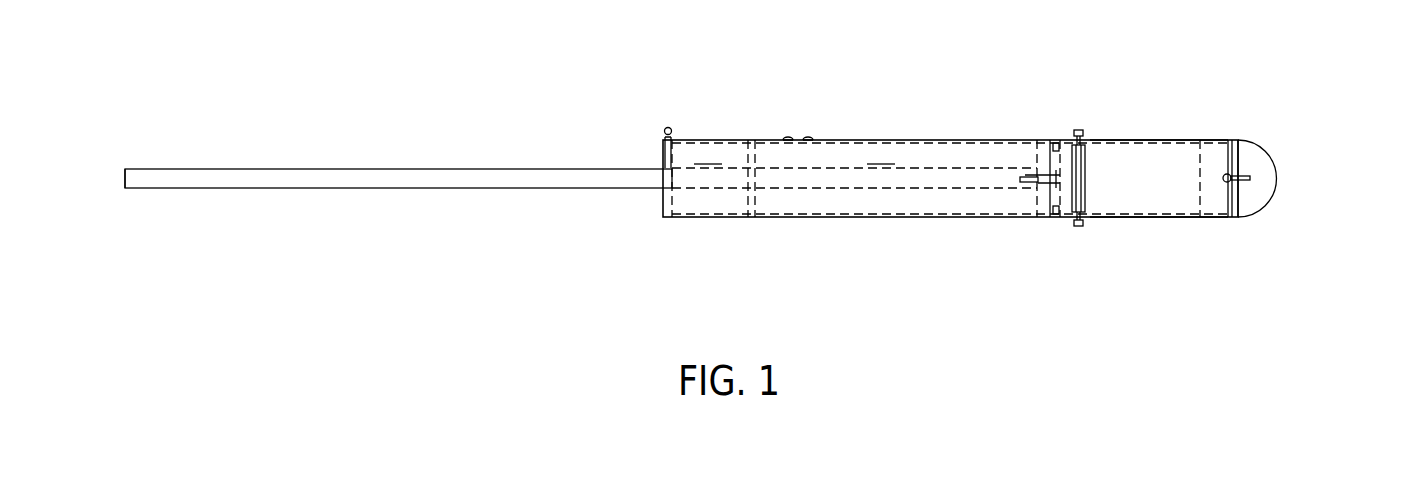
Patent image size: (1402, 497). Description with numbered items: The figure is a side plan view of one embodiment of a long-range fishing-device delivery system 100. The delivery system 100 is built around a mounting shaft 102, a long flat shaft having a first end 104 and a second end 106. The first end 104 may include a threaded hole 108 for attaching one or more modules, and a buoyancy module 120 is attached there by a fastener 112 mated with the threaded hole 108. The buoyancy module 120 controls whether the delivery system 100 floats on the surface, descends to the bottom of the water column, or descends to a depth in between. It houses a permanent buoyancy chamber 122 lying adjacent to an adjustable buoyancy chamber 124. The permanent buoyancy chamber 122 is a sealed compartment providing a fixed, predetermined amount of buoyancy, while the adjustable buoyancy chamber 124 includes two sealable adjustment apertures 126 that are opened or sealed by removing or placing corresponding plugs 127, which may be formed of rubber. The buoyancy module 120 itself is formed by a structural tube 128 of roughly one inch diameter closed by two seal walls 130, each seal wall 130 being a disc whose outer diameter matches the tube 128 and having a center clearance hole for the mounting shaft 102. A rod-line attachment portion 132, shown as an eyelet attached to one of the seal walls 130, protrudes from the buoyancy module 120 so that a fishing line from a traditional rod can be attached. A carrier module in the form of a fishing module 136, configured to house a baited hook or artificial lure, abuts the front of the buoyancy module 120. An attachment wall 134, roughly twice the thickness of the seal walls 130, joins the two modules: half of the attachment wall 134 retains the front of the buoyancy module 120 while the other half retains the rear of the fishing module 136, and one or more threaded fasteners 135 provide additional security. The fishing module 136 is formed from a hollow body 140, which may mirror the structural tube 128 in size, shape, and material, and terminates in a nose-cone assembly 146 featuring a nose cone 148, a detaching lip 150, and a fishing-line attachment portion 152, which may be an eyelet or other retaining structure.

The long-range fishing-device delivery system 100 is at (487, 91).
The mounting shaft 102 is at (295, 202).
The first end 104 is at (1008, 202).
The second end 106 is at (155, 161).
The threaded hole 108 is at (1046, 166).
The fastener 112 is at (1013, 164).
The buoyancy module 120 is at (783, 255).
The permanent buoyancy chamber 122 is at (708, 154).
The adjustable buoyancy chamber 124 is at (952, 178).
The adjustment apertures 126 is at (793, 155).
The plugs 127 is at (797, 128).
The structural tube 128 is at (672, 231).
The seal walls 130 is at (688, 193).
The rod-line attachment portion 132 is at (652, 123).
The attachment wall 134 is at (1048, 223).
The threaded fasteners 135 is at (1067, 132).
The fishing module 136 is at (1174, 110).
The hollow body 140 is at (1146, 233).
The nose-cone assembly 146 is at (1294, 150).
The nose cone 148 is at (1268, 136).
The detaching lip 150 is at (1214, 208).
The fishing-line attachment portion 152 is at (1249, 194).